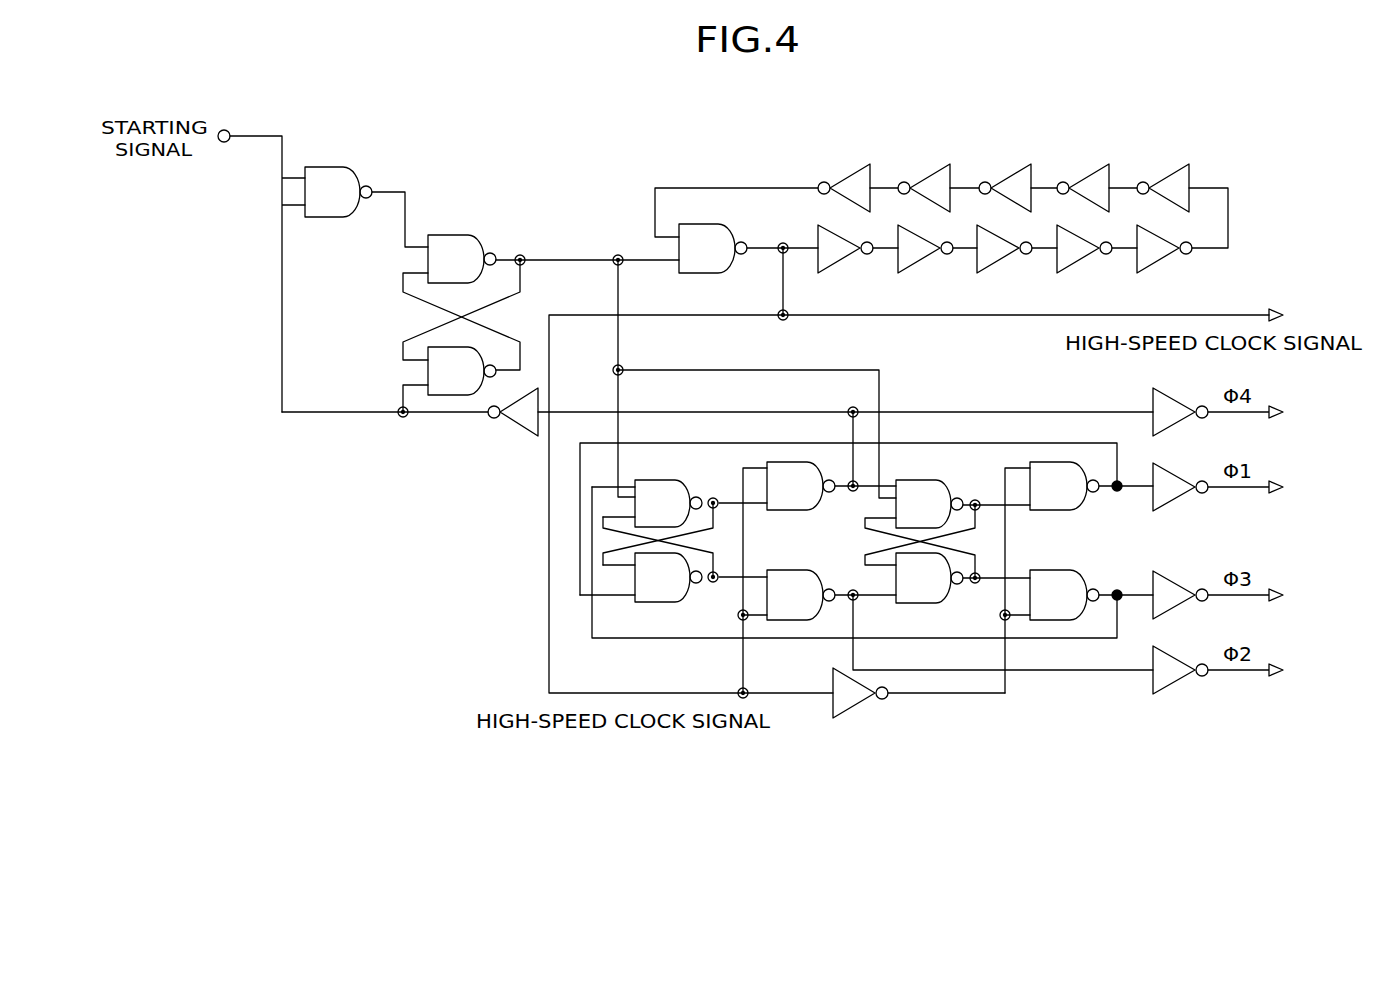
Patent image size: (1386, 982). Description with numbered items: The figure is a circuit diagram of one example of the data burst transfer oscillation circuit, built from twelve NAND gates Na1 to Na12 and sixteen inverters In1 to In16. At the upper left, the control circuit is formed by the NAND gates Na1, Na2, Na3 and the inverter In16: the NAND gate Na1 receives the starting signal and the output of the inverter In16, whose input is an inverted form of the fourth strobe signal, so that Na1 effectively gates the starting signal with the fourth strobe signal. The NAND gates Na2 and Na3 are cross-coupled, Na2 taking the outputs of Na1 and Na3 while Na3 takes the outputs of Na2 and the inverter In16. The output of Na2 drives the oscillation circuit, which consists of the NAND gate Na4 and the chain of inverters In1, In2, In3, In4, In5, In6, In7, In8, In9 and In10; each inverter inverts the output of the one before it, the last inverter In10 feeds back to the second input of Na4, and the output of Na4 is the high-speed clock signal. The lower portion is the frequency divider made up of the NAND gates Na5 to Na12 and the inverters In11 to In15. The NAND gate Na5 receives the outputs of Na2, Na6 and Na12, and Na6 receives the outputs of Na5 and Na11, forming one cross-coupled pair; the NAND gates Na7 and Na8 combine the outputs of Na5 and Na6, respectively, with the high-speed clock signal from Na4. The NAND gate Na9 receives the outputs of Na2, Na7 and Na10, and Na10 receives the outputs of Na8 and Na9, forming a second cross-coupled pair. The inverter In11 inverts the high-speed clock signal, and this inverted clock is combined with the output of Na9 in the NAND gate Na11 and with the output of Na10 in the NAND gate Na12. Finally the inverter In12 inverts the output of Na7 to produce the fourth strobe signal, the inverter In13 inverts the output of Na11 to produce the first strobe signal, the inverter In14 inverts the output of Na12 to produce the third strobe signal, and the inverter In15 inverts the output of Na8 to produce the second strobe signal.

The NAND gate Na1 is at (322, 167).
The NAND gate Na2 is at (455, 235).
The NAND gate Na3 is at (453, 395).
The NAND gate Na4 is at (700, 224).
The NAND gate Na5 is at (712, 474).
The NAND gate Na6 is at (688, 602).
The NAND gate Na7 is at (810, 510).
The NAND gate Na8 is at (830, 565).
The NAND gate Na9 is at (968, 474).
The NAND gate Na10 is at (966, 615).
The NAND gate Na11 is at (1075, 510).
The NAND gate Na12 is at (1098, 565).
The inverter In1 is at (843, 265).
The inverter In2 is at (923, 265).
The inverter In3 is at (1002, 265).
The inverter In4 is at (1082, 265).
The inverter In5 is at (1160, 265).
The inverter In6 is at (1168, 172).
The inverter In7 is at (1088, 172).
The inverter In8 is at (1010, 172).
The inverter In9 is at (930, 172).
The inverter In10 is at (850, 172).
The inverter In11 is at (852, 710).
The inverter In12 is at (1173, 427).
The inverter In13 is at (1173, 502).
The inverter In14 is at (1173, 610).
The inverter In15 is at (1173, 685).
The inverter In16 is at (522, 433).